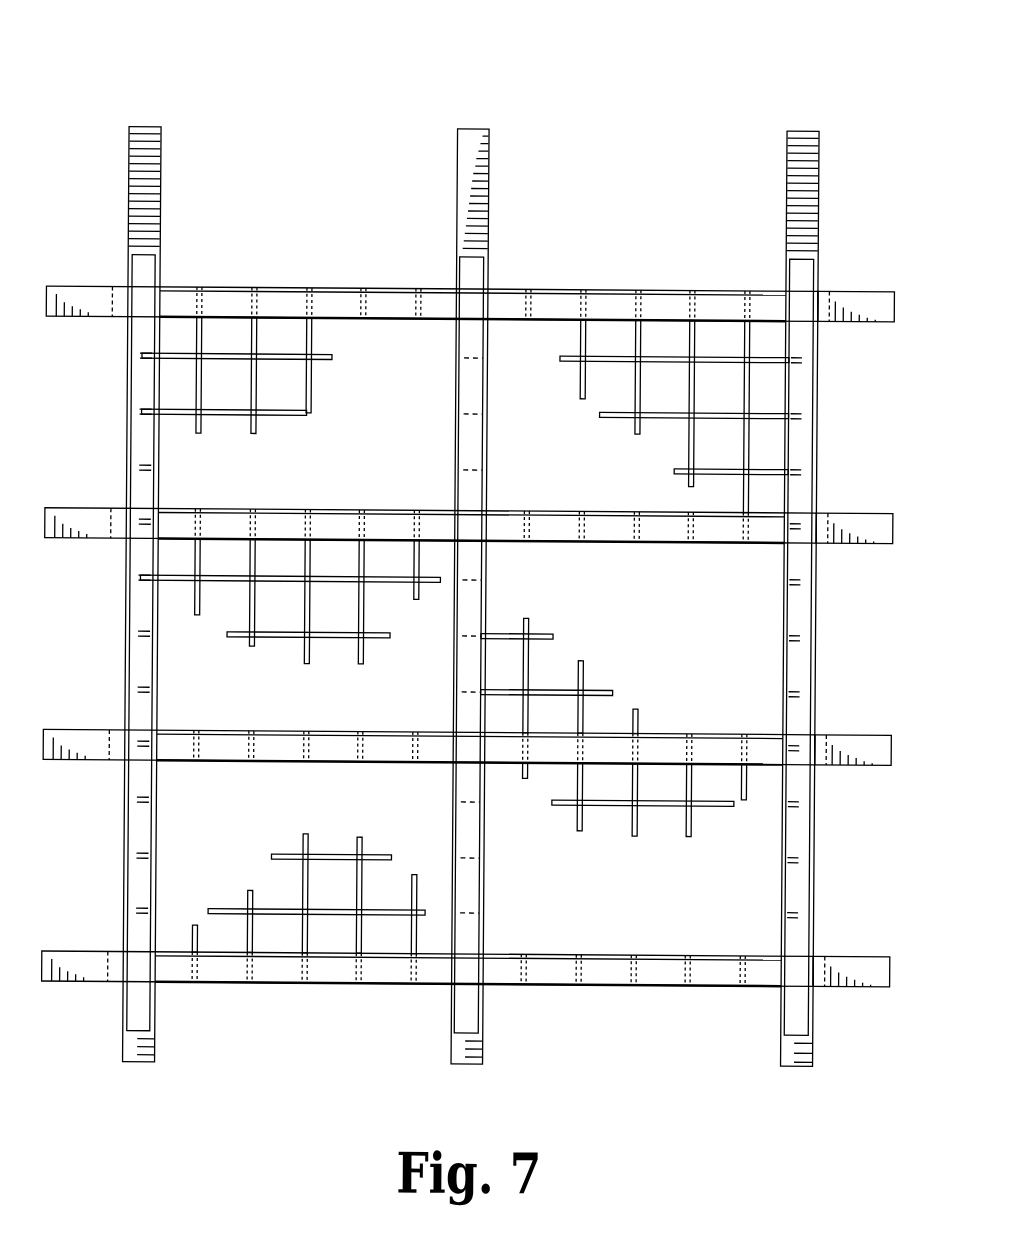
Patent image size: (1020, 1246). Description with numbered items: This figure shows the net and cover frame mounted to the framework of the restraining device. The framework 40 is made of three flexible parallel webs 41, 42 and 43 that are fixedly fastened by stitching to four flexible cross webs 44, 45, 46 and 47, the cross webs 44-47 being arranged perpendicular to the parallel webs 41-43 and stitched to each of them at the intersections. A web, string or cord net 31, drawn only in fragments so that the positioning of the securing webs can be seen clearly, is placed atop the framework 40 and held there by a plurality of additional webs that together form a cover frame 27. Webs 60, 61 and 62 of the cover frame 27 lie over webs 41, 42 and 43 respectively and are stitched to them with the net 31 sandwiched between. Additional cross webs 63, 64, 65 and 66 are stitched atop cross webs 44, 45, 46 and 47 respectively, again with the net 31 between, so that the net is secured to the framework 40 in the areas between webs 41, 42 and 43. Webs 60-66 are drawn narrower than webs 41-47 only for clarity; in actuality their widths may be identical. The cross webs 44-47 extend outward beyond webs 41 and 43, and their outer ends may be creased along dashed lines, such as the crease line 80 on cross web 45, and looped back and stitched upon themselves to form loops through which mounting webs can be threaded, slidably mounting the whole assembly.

The cover frame 27 is at (469, 496).
The net 31 is at (308, 359).
The framework 40 is at (462, 544).
The web 41 is at (145, 147).
The web 42 is at (465, 150).
The web 43 is at (804, 150).
The cross web 44 is at (880, 297).
The cross web 45 is at (880, 522).
The cross web 46 is at (882, 745).
The cross web 47 is at (883, 965).
The web 60 is at (141, 1008).
The web 61 is at (462, 1007).
The web 62 is at (800, 1010).
The cross web 63 is at (178, 304).
The cross web 64 is at (431, 486).
The cross web 65 is at (178, 748).
The cross web 66 is at (169, 972).
The crease line 80 is at (111, 525).